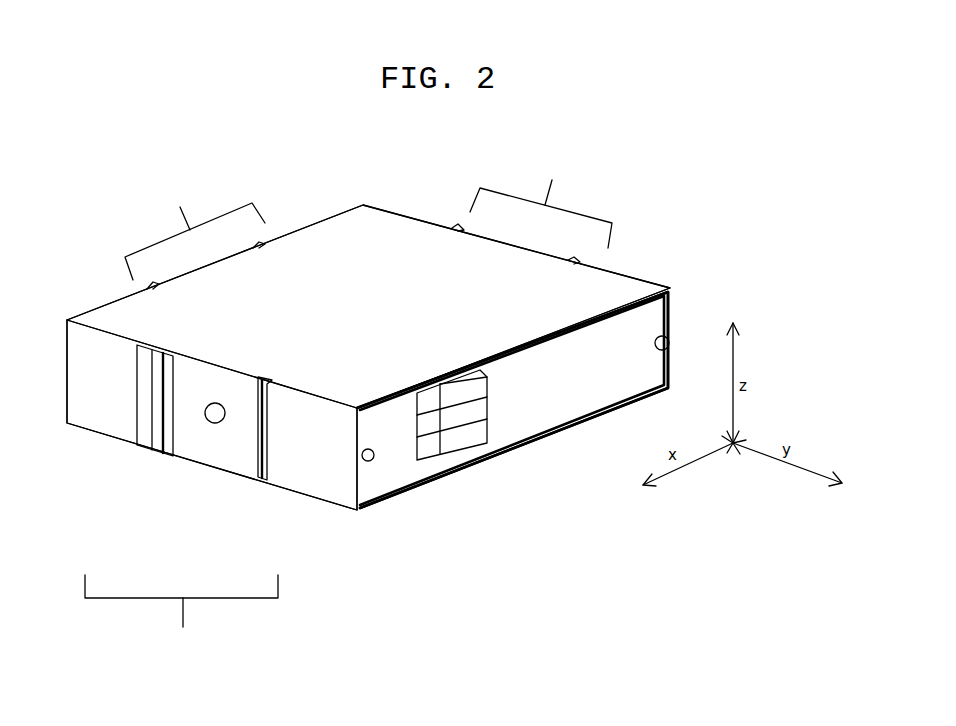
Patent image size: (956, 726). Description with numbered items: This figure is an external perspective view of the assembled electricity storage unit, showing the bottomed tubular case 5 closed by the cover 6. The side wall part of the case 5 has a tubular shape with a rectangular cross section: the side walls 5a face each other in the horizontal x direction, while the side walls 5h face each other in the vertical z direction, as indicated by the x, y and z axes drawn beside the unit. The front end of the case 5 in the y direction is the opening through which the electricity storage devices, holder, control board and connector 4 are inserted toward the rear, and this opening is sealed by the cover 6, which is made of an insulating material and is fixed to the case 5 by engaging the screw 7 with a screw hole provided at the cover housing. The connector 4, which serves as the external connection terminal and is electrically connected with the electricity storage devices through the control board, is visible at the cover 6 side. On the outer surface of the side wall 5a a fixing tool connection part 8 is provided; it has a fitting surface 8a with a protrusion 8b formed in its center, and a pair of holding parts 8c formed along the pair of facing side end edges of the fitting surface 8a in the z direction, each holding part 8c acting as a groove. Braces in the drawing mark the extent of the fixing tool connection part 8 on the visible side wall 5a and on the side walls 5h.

The connector 4 is at (450, 450).
The bottomed tubular case 5 is at (360, 225).
The side wall 5a is at (97, 360).
The side wall 5h is at (298, 272).
The cover 6 is at (575, 398).
The screw 7 is at (368, 458).
The fixing tool connection part 8 is at (348, 407).
The fitting surface 8a is at (240, 452).
The protrusion 8b is at (212, 416).
The holding part 8c is at (160, 430).